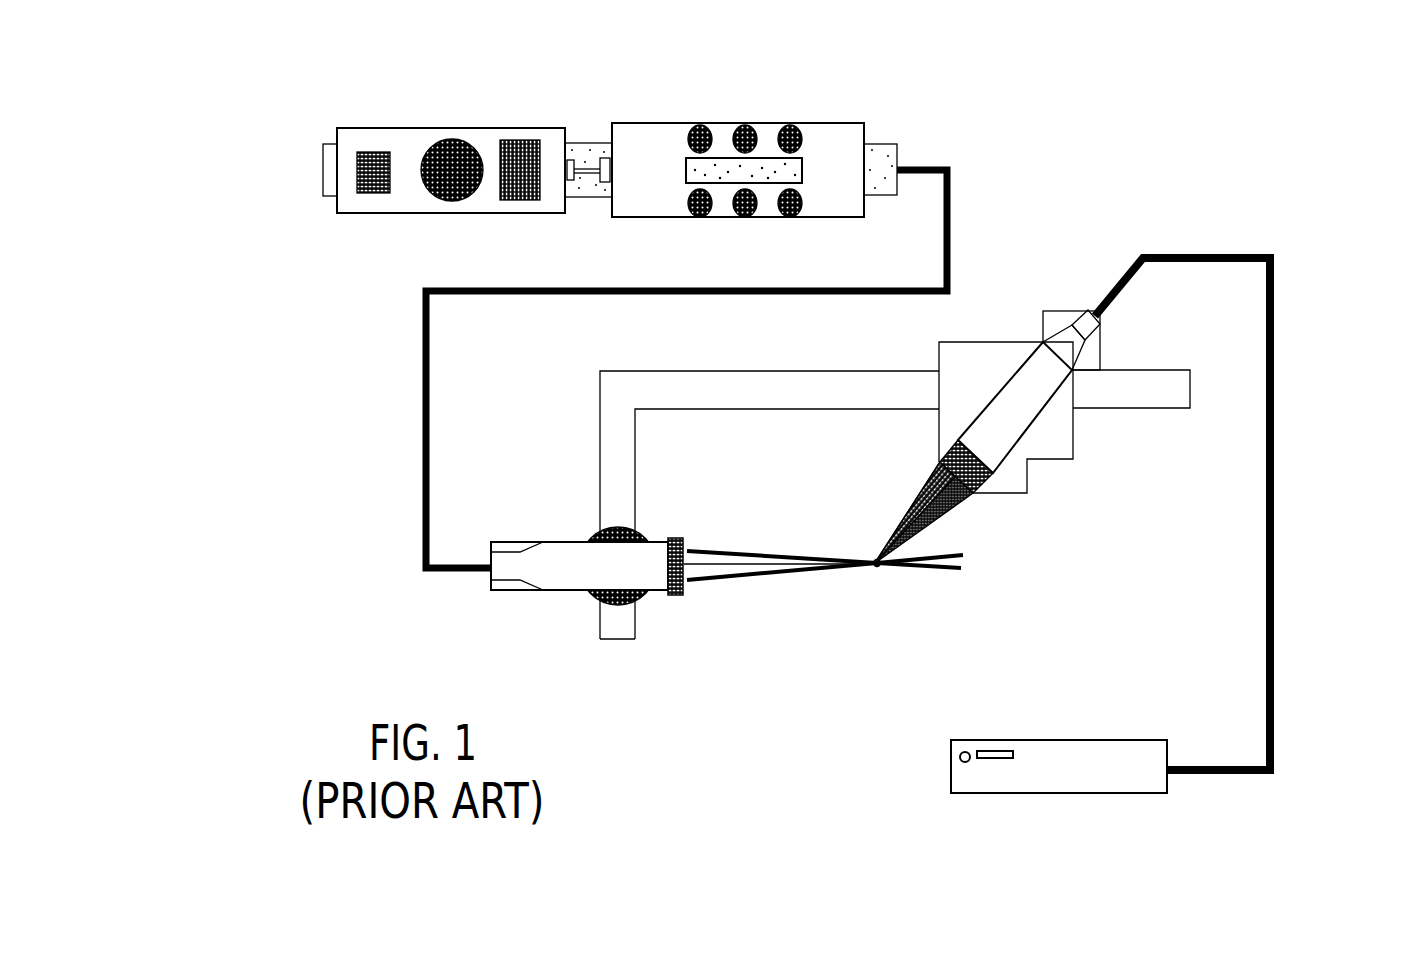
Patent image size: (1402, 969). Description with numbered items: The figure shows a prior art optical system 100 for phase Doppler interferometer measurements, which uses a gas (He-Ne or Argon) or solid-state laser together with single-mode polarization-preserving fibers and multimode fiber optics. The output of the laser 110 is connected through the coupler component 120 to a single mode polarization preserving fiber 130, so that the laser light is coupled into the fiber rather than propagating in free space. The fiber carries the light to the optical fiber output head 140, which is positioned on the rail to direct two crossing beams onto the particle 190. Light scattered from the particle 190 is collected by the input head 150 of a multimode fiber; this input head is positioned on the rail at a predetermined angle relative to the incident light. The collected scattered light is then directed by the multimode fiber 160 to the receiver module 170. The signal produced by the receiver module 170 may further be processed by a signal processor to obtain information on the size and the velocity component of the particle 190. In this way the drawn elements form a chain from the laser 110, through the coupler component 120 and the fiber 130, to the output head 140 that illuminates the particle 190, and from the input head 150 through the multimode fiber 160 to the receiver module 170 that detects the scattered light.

The prior art optical system 100 is at (222, 505).
The laser 110 is at (358, 138).
The coupler component 120 is at (838, 133).
The single mode polarization preserving fiber 130 is at (758, 296).
The optical fiber output head 140 is at (660, 540).
The input head of a multimode fiber 150 is at (1017, 338).
The multimode fiber 160 is at (1285, 397).
The receiver module 170 is at (1035, 740).
The particle 190 is at (880, 567).